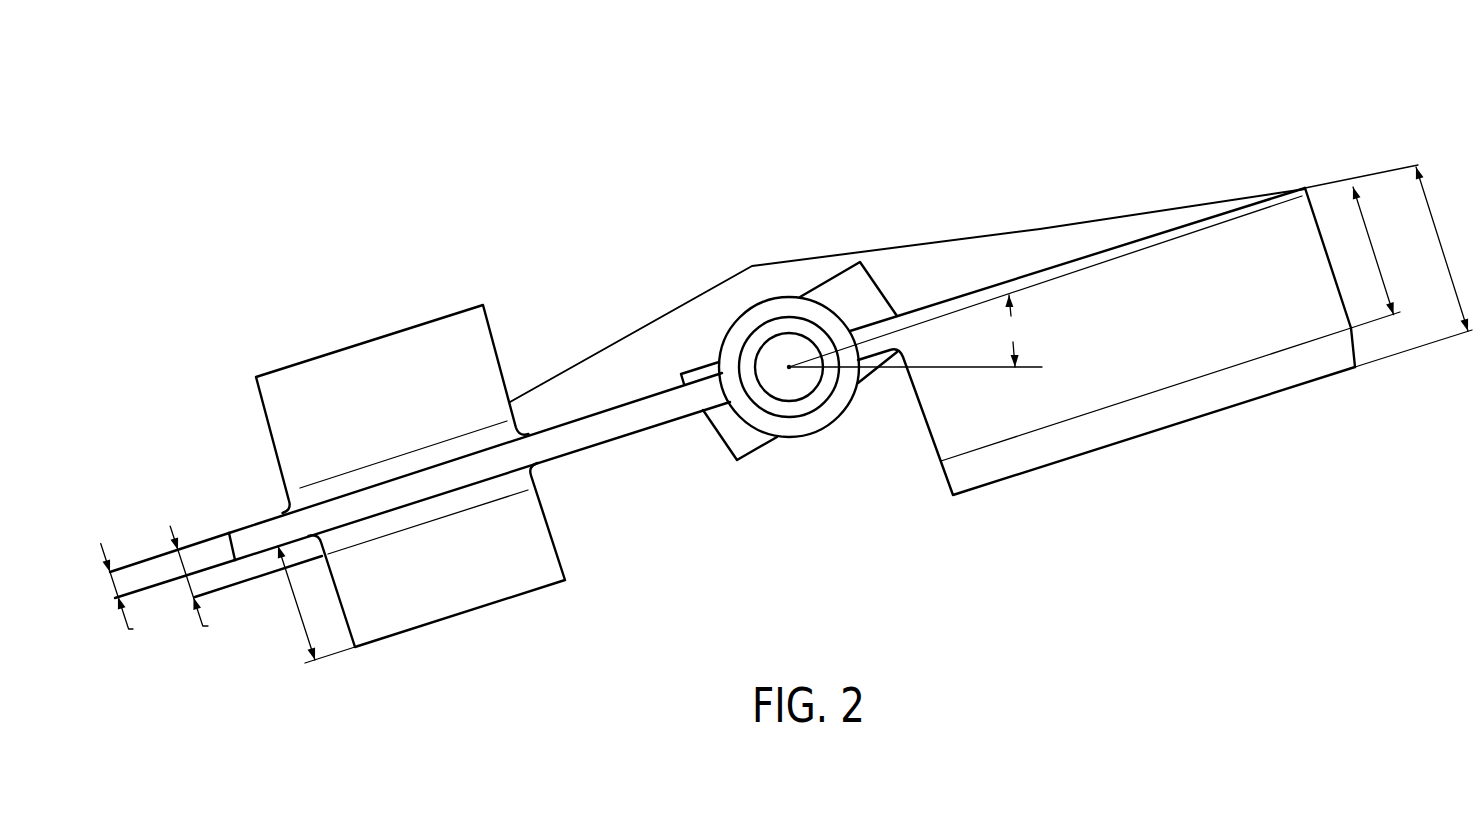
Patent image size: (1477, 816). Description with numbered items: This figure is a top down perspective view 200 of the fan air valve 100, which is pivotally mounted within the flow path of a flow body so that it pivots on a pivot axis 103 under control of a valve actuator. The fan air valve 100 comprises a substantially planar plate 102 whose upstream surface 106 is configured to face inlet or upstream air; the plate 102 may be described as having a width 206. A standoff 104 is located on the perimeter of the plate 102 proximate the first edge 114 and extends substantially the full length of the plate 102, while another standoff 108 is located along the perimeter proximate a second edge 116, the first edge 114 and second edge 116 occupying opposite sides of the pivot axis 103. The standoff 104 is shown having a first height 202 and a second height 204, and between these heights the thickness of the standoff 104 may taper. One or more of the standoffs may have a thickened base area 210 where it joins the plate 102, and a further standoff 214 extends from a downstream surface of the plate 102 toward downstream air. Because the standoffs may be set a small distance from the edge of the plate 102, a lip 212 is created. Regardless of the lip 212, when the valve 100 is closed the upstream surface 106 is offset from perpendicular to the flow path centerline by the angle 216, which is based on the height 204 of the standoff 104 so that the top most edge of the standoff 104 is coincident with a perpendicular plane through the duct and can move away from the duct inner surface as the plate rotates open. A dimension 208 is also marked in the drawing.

The fan air valve 100 is at (640, 328).
The substantially planar plate 102 is at (598, 413).
The pivot axis 103 is at (789, 367).
The standoff 104 is at (937, 440).
The upstream surface 106 is at (627, 432).
The standoff 108 is at (463, 614).
The first edge 114 is at (1305, 188).
The second edge 116 is at (228, 532).
The top down perspective view of the fan air valve 200 is at (1220, 120).
The first height 202 is at (1361, 246).
The second height 204 is at (1413, 267).
The width 206 is at (139, 594).
The lower block height 208 is at (312, 604).
The thickened base area 210 is at (212, 584).
The lip 212 is at (265, 520).
The standoff 214 is at (307, 357).
The angle 216 is at (1020, 346).